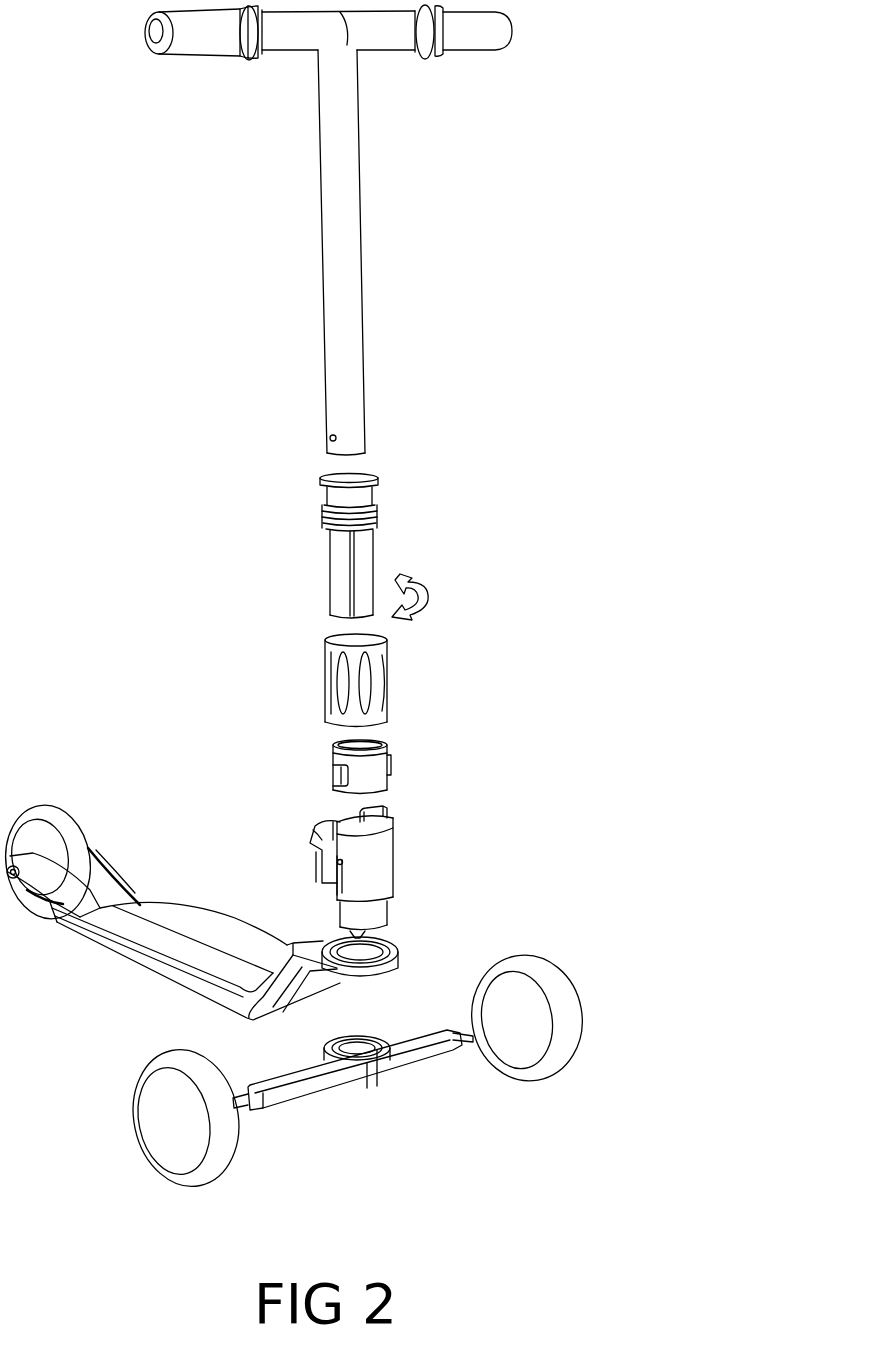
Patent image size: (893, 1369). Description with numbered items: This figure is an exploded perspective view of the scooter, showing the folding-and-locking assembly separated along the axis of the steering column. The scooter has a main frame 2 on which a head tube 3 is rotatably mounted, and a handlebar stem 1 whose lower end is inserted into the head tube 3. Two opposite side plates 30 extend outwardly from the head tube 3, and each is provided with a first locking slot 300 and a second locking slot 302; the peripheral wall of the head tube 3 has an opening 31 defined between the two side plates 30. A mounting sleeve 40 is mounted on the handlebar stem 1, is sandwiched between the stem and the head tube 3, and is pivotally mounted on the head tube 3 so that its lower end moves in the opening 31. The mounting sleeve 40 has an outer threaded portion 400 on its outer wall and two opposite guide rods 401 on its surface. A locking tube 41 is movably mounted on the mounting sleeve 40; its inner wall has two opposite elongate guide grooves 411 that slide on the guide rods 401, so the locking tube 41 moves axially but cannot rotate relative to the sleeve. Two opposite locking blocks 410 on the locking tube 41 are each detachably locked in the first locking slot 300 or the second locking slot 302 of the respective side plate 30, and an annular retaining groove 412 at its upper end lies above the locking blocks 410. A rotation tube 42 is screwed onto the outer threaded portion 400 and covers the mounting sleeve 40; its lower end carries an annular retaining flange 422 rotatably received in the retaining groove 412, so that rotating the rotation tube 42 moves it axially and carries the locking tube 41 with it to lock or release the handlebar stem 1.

The handlebar stem 1 is at (350, 324).
The main frame 2 is at (185, 904).
The head tube 3 is at (340, 829).
The side plates 30 is at (327, 873).
The opening 31 is at (348, 815).
The mounting sleeve 40 is at (318, 484).
The locking tube 41 is at (336, 721).
The rotation tube 42 is at (327, 657).
The first locking slot 300 is at (393, 850).
The second locking slot 302 is at (312, 850).
The outer threaded portion 400 is at (327, 507).
The guide rods 401 is at (352, 575).
The locking blocks 410 is at (333, 773).
The elongate guide grooves 411 is at (342, 742).
The annular retaining groove 412 is at (383, 750).
The annular retaining flange 422 is at (385, 732).